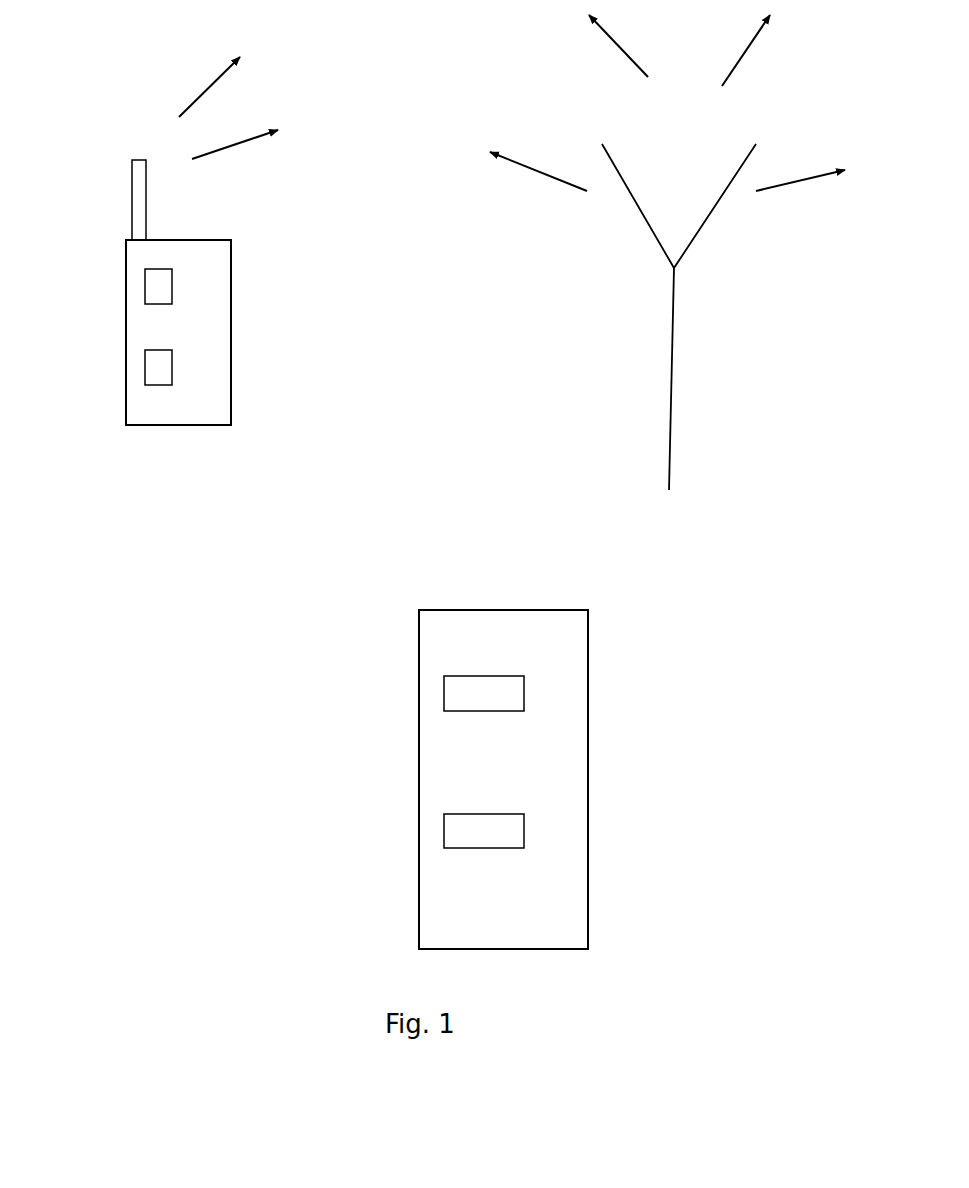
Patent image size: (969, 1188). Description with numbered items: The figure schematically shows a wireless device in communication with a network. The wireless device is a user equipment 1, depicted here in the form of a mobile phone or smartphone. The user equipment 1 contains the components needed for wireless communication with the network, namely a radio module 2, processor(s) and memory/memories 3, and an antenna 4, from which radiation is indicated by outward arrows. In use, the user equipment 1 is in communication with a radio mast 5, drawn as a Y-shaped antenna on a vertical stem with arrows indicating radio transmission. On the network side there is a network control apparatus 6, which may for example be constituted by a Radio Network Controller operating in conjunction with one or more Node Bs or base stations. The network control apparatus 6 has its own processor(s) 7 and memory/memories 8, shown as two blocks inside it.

The user equipment 1 is at (232, 320).
The radio module 2 is at (145, 283).
The processor(s) and memory/memories 3 is at (145, 365).
The antenna 4 is at (132, 188).
The radio mast 5 is at (672, 351).
The network control apparatus 6 is at (589, 737).
The processor(s) 7 is at (444, 694).
The memory/memories 8 is at (444, 830).